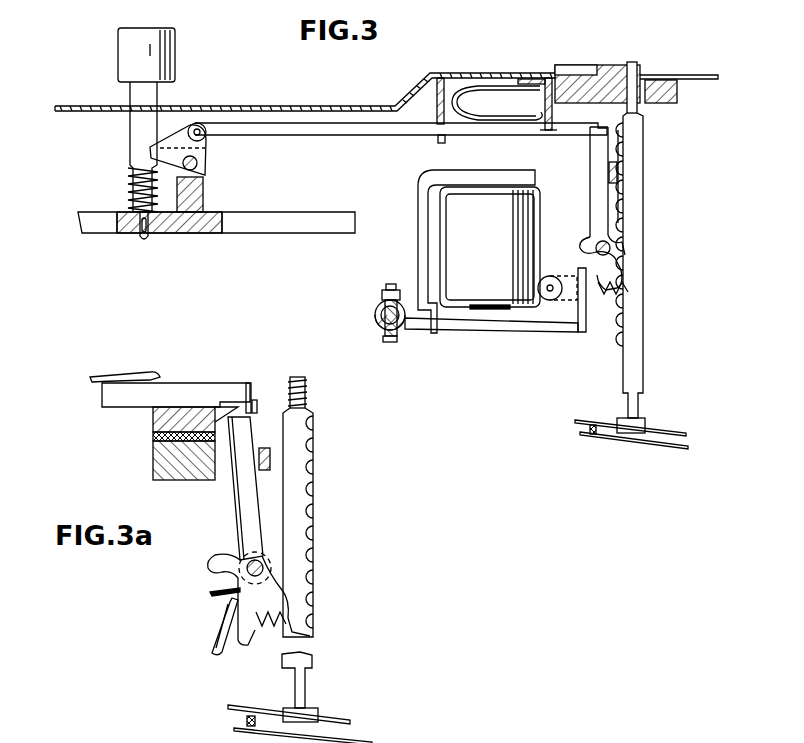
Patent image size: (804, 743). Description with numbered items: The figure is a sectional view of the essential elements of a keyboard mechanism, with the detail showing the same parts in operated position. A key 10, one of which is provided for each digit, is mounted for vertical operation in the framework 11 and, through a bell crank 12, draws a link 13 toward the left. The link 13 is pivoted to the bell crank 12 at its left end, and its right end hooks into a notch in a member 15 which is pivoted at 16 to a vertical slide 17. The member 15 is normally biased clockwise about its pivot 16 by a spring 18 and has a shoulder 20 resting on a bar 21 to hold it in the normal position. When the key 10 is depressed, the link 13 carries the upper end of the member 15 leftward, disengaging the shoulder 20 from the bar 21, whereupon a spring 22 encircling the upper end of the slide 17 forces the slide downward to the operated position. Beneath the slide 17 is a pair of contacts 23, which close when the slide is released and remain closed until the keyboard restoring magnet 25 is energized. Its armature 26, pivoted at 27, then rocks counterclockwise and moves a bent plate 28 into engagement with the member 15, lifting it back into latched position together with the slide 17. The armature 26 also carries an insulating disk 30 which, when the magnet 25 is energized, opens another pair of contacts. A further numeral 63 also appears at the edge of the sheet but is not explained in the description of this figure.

In FIG. 3, the key 10 is at (155, 58).
In FIG. 3, the framework 11 is at (260, 104).
In FIG. 3, the bell crank 12 is at (202, 149).
In FIG. 3, the link 13 is at (386, 131).
In FIG. 3A, the link 13 is at (180, 392).
In FIG. 3, the member 15 is at (600, 160).
In FIG. 3A, the member 15 is at (245, 493).
In FIG. 3, the pivot 16 is at (590, 252).
In FIG. 3A, the pivot 16 is at (247, 560).
In FIG. 3, the vertical slide 17 is at (645, 249).
In FIG. 3A, the vertical slide 17 is at (313, 503).
In FIG. 3, the spring 18 is at (608, 298).
In FIG. 3A, the spring 18 is at (274, 634).
In FIG. 3, the shoulder 20 is at (611, 170).
In FIG. 3A, the shoulder 20 is at (264, 459).
In FIG. 3, the bar 21 is at (612, 186).
In FIG. 3A, the bar 21 is at (254, 406).
In FIG. 3A, the spring 22 is at (306, 390).
In FIG. 3, the contacts 23 is at (592, 431).
In FIG. 3A, the contacts 23 is at (246, 723).
In FIG. 3, the keyboard restoring magnet 25 is at (494, 259).
In FIG. 3, the armature 26 is at (521, 327).
In FIG. 3A, the armature 26 is at (216, 648).
In FIG. 3, the pivot 27 is at (401, 319).
In FIG. 3, the bent plate 28 is at (585, 335).
In FIG. 3A, the bent plate 28 is at (211, 594).
In FIG. 3, the insulating disk 30 is at (549, 279).
In FIG. 3A, the element 63 is at (436, 732).